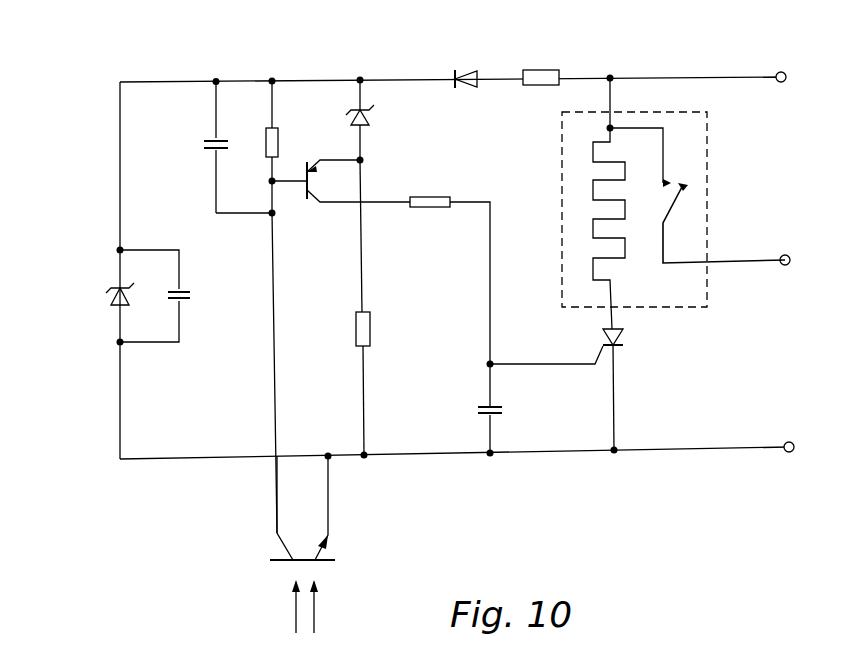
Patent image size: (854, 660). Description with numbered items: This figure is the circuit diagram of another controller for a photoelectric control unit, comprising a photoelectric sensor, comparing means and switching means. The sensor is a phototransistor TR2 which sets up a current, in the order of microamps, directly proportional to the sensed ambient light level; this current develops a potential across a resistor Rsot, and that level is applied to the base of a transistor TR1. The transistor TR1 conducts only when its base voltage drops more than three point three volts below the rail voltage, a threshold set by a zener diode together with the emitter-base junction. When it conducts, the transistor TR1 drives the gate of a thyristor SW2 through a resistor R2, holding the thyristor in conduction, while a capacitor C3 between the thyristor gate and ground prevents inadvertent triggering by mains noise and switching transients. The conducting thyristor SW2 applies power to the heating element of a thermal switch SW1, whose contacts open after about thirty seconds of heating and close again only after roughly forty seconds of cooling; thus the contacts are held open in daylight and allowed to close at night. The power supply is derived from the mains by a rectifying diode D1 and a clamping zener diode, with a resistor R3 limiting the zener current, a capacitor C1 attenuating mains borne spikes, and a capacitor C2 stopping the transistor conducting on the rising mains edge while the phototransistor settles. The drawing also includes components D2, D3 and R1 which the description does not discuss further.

The capacitor C1 is at (176, 296).
The capacitor C2 is at (211, 147).
The capacitor C3 is at (477, 419).
The diode D1 is at (94, 302).
The zener diode 2V7 BZY88 D2 is at (387, 120).
The diode 1N4006 D3 is at (459, 76).
The resistor 27K 1/4W R1 is at (366, 307).
The resistor R2 is at (449, 287).
The resistor R3 is at (557, 75).
The resistor Rsot is at (298, 147).
The transistor TR1 is at (341, 195).
The phototransistor TR2 is at (346, 544).
The thermal switch SW1 is at (679, 203).
The thyristor SW2 is at (590, 389).